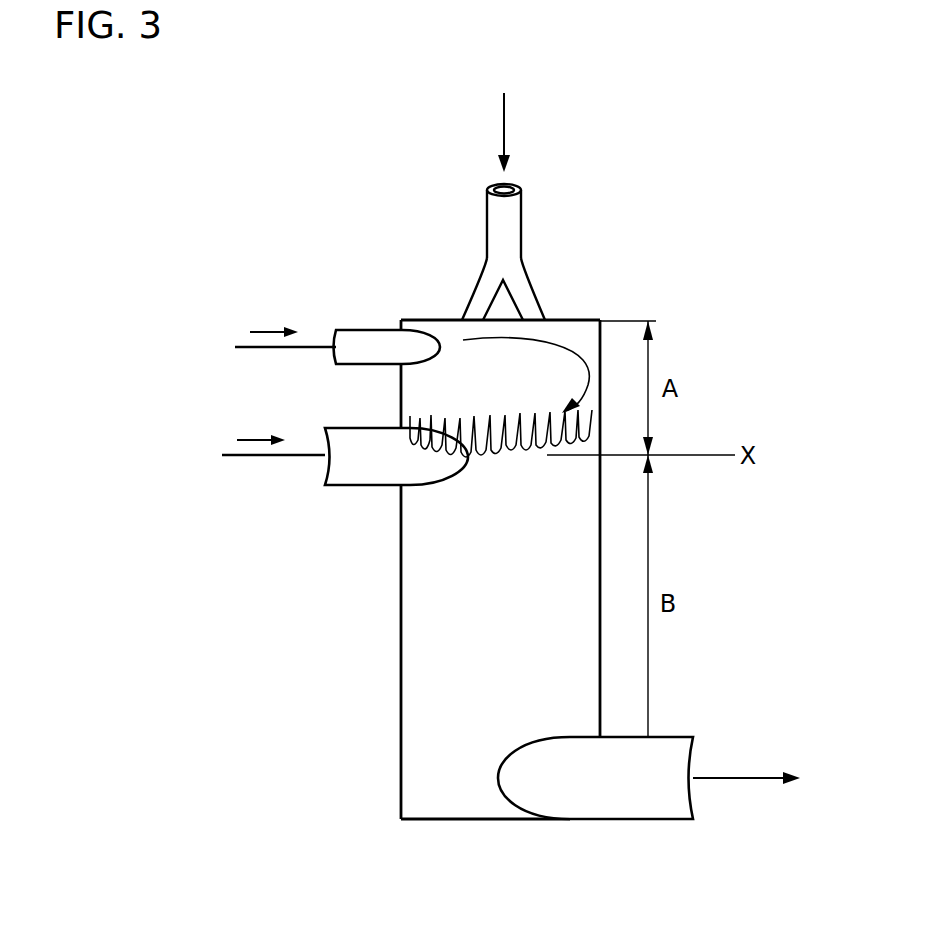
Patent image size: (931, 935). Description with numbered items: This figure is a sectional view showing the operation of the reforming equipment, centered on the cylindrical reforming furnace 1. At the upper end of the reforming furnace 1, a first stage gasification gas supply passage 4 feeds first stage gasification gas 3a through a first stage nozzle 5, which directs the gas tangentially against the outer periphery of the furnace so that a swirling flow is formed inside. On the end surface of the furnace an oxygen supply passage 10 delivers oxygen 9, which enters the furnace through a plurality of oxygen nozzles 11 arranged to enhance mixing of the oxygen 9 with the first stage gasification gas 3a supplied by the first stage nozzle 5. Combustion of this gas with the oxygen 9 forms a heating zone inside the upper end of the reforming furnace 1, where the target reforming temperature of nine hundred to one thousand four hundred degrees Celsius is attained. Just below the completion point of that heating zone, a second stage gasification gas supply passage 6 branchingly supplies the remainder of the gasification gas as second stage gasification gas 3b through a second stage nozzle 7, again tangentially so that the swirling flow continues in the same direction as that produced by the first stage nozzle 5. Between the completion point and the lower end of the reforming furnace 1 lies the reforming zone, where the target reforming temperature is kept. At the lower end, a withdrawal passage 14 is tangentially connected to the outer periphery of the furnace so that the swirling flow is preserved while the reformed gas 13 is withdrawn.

The reforming furnace 1 is at (390, 718).
The first stage gasification gas 3a is at (265, 330).
The second stage gasification gas 3b is at (250, 435).
The first stage gasification gas supply passage 4 is at (270, 348).
The first stage nozzle 5 is at (350, 333).
The second stage gasification gas supply passage 6 is at (284, 460).
The second stage nozzle 7 is at (350, 467).
The oxygen 9 is at (504, 120).
The oxygen supply passage 10 is at (521, 216).
The oxygen nozzles 11 is at (470, 292).
The reformed gas 13 is at (740, 778).
The withdrawal passage 14 is at (670, 748).